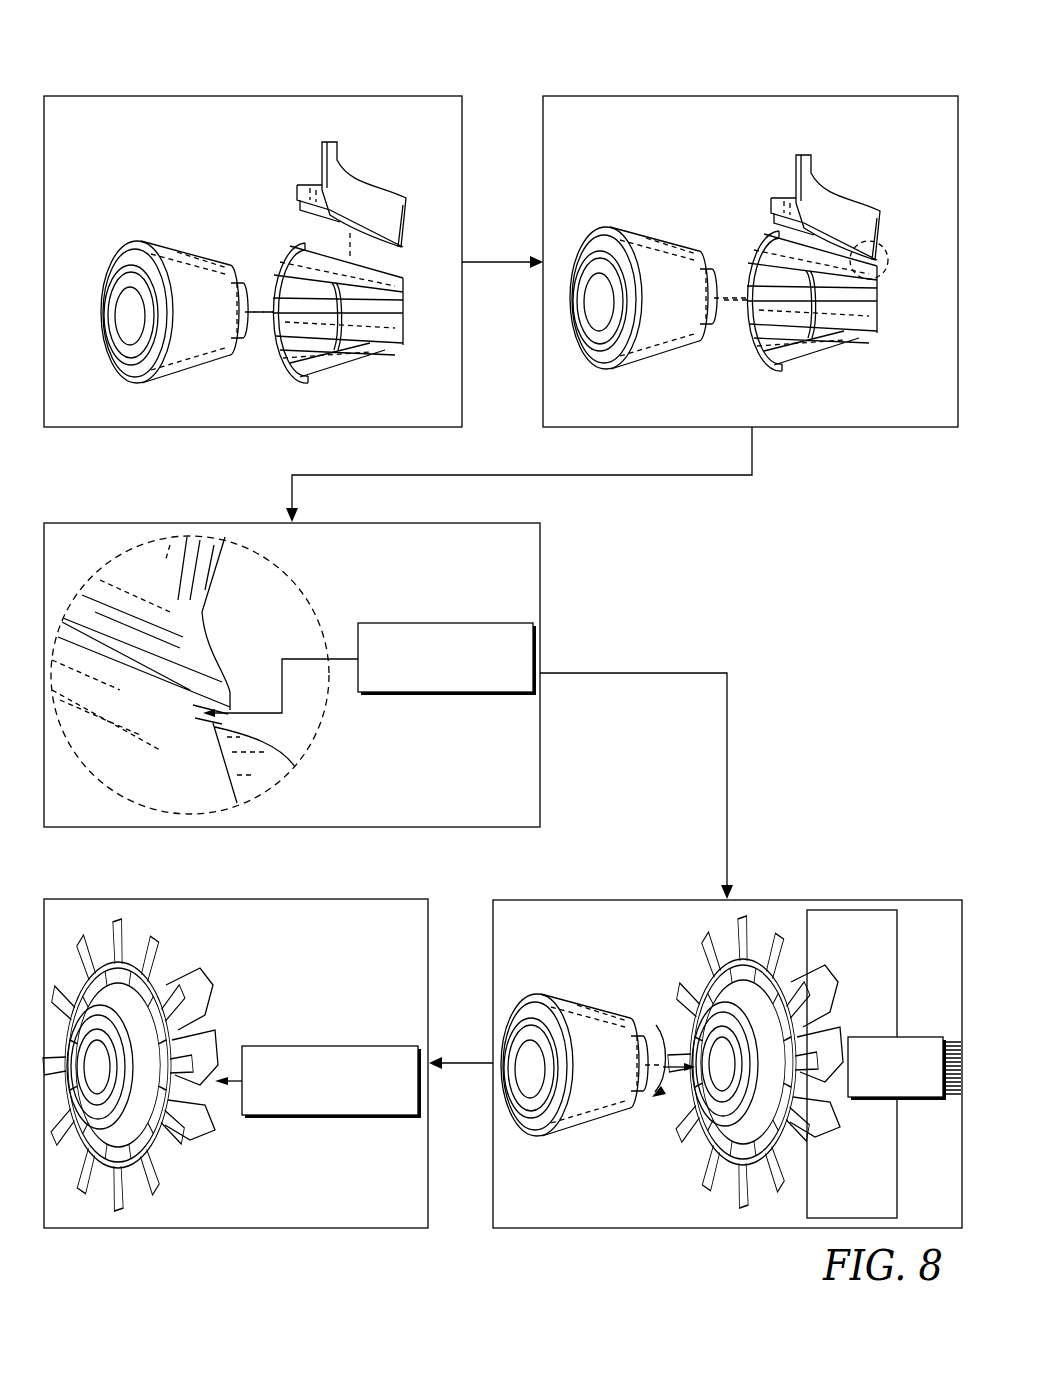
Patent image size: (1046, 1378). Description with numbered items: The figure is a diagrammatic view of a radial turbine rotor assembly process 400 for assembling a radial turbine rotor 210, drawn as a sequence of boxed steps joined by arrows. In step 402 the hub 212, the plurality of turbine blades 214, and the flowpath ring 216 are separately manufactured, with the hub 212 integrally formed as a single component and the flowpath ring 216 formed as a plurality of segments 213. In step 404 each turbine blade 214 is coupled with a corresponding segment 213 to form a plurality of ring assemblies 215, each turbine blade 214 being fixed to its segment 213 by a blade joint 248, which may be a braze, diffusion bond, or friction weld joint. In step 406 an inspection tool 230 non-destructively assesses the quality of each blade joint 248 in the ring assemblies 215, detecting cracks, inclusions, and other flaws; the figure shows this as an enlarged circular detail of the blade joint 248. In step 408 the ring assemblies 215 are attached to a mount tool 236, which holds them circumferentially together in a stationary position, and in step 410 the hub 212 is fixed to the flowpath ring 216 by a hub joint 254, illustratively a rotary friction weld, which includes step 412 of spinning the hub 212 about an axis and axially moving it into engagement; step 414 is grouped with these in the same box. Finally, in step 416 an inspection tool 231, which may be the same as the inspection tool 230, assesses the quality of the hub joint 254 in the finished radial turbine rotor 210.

The radial turbine rotor assembly process 400 is at (140, 86).
The step 402 is at (253, 95).
The step 404 is at (623, 88).
The step 406 is at (122, 522).
The step 408 is at (727, 1032).
The step 410 is at (727, 1032).
The step 412 is at (727, 1032).
The securing step 414 is at (590, 862).
The step 416 is at (122, 898).
The radial turbine rotor 210 is at (236, 956).
The hub 212 is at (170, 236).
The segments 213 is at (374, 289).
The turbine blades 214 is at (355, 160).
The ring assemblies 215 is at (741, 196).
The flowpath ring 216 is at (285, 238).
The inspection tool 230 is at (438, 622).
The inspection tool 231 is at (323, 1045).
The mount tool 236 is at (913, 1036).
The blade joint 248 is at (876, 258).
The hub joint 254 is at (235, 1025).